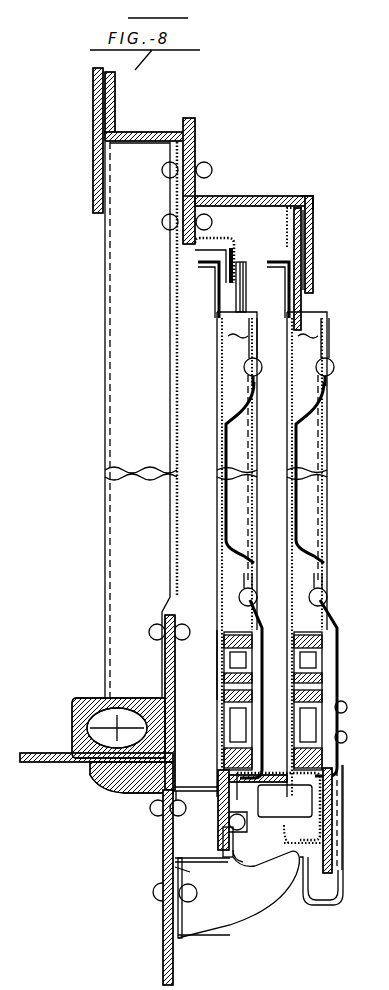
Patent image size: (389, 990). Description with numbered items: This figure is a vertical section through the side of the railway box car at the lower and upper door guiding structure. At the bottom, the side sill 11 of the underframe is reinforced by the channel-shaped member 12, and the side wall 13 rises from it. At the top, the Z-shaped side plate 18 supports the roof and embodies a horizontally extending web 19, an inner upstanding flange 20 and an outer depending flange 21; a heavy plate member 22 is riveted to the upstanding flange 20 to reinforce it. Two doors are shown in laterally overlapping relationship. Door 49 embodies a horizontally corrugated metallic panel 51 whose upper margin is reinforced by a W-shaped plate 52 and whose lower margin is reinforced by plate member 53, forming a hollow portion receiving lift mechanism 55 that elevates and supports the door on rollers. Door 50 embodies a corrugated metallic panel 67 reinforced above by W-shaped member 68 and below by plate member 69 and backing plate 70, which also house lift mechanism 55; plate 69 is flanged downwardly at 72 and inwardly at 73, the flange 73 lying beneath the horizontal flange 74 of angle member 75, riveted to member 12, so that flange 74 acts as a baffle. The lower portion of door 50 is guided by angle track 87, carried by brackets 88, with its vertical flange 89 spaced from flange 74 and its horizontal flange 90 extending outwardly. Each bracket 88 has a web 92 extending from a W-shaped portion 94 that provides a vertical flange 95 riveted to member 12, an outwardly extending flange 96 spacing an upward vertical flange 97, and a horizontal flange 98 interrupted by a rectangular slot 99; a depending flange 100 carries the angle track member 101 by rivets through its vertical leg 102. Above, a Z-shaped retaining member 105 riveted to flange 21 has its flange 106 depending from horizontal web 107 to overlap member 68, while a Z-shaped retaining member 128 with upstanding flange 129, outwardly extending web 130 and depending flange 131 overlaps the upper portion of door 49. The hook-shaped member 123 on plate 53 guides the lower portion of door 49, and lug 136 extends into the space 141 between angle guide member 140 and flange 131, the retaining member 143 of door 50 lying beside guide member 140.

The side sill 11 is at (177, 718).
The channel-shaped member 12 is at (163, 957).
The side wall 13 is at (180, 442).
The side plate 18 is at (117, 130).
The horizontally extending web 19 is at (134, 143).
The inner upstanding flange 20 is at (115, 104).
The outer depending flange 21 is at (183, 191).
The heavy plate member 22 is at (95, 177).
The door 49 is at (327, 443).
The door 50 is at (253, 455).
The horizontally corrugated metallic panel 51 is at (325, 515).
The W-shaped plate 52 is at (327, 312).
The plate member 53 is at (334, 632).
The lift mechanism 55 is at (252, 690).
The corrugated metallic panel 67 is at (252, 518).
The W-shaped member 68 is at (253, 312).
The plate member 69 is at (258, 628).
The backing plate 70 is at (217, 642).
The downward flange 72 is at (218, 768).
The inward flange 73 is at (229, 821).
The horizontal flange 74 is at (193, 787).
The angle member 75 is at (170, 802).
The angle track 87 is at (223, 841).
The bracket 88 is at (262, 908).
The vertical flange 89 is at (230, 862).
The horizontal flange 90 is at (272, 775).
The web 92 is at (227, 908).
The W-shaped portion 94 is at (243, 862).
The vertical flange 95 is at (180, 910).
The outwardly extending flange 96 is at (203, 860).
The vertical flange 97 is at (236, 851).
The horizontal flange 98 is at (303, 787).
The rectangular slot 99 is at (272, 808).
The vertical flange 100 is at (312, 828).
The angle track member 101 is at (332, 811).
The vertical leg 102 is at (336, 840).
The Z-shaped retaining member 105 is at (238, 246).
The flange 106 is at (226, 287).
The horizontal web 107 is at (208, 243).
The hook-shaped member 123 is at (342, 788).
The Z-shaped retaining member 128 is at (313, 196).
The vertical upstanding flange 129 is at (195, 154).
The outwardly extending web 130 is at (243, 195).
The depending flange 131 is at (313, 259).
The lug 136 is at (313, 233).
The angle guide member 140 is at (316, 211).
The space 141 is at (297, 205).
The retaining member 143 is at (247, 272).